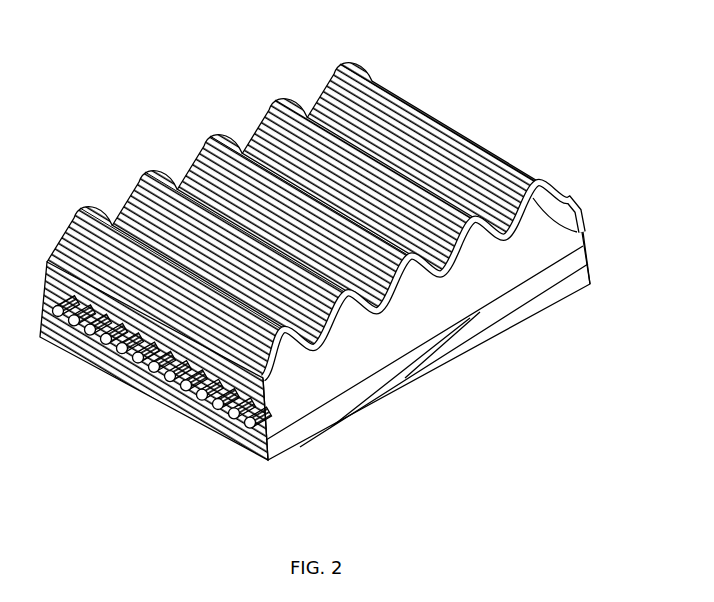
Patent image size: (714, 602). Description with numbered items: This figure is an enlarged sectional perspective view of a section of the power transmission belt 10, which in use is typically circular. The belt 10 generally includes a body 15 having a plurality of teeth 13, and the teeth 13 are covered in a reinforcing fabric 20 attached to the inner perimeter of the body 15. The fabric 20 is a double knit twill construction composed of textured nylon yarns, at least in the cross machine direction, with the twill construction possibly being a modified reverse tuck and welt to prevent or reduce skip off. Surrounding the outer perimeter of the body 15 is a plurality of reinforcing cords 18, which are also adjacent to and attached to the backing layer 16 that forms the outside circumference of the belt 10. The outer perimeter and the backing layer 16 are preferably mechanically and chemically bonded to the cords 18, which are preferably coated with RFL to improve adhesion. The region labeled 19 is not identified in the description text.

The belt 10 is at (117, 151).
The teeth 13 is at (323, 73).
The body 15 is at (588, 233).
The backing layer 16 is at (440, 345).
The reinforcing cords 18 is at (233, 443).
The compression rubber layer 19 is at (313, 362).
The fabric 20 is at (550, 177).